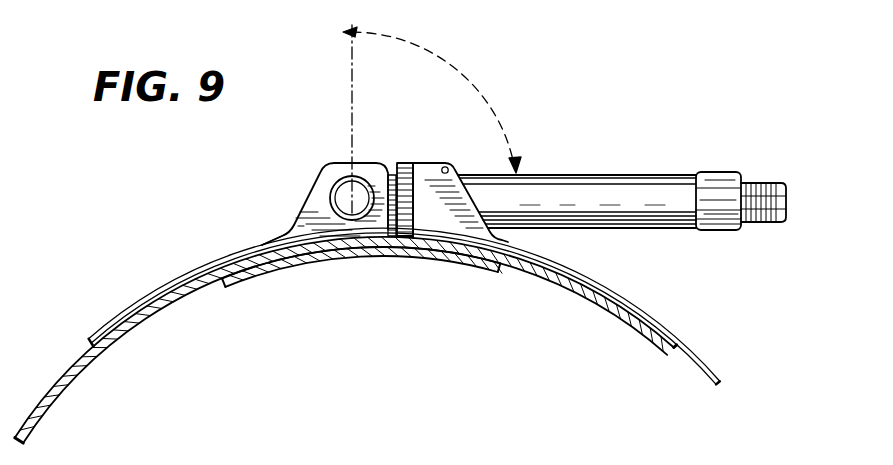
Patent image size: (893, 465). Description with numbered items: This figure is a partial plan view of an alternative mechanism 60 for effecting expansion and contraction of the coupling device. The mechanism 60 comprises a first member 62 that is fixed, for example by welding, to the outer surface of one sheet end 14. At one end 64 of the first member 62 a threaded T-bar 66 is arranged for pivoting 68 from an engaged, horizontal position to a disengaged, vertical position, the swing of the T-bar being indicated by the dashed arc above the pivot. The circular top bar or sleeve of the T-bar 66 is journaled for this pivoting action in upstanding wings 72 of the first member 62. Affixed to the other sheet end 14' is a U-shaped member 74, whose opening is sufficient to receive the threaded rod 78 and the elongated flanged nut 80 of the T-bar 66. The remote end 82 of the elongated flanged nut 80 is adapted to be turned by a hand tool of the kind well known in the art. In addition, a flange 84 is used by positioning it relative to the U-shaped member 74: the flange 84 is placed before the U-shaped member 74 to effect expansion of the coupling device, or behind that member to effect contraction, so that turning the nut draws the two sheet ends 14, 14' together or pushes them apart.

The sheet end 14 is at (346, 340).
The other sheet end 14' is at (362, 269).
The mechanism 60 is at (495, 237).
The first member 62 is at (160, 286).
The one end 64 is at (388, 185).
The threaded T-bar 66 is at (398, 192).
The pivoting 68 is at (290, 244).
The upstanding wings 72 is at (311, 190).
The U-shaped member 74 is at (466, 232).
The threaded rod 78 is at (771, 182).
The elongated flanged nut 80 is at (570, 186).
The remote end 82 is at (735, 230).
The flange 84 is at (444, 178).